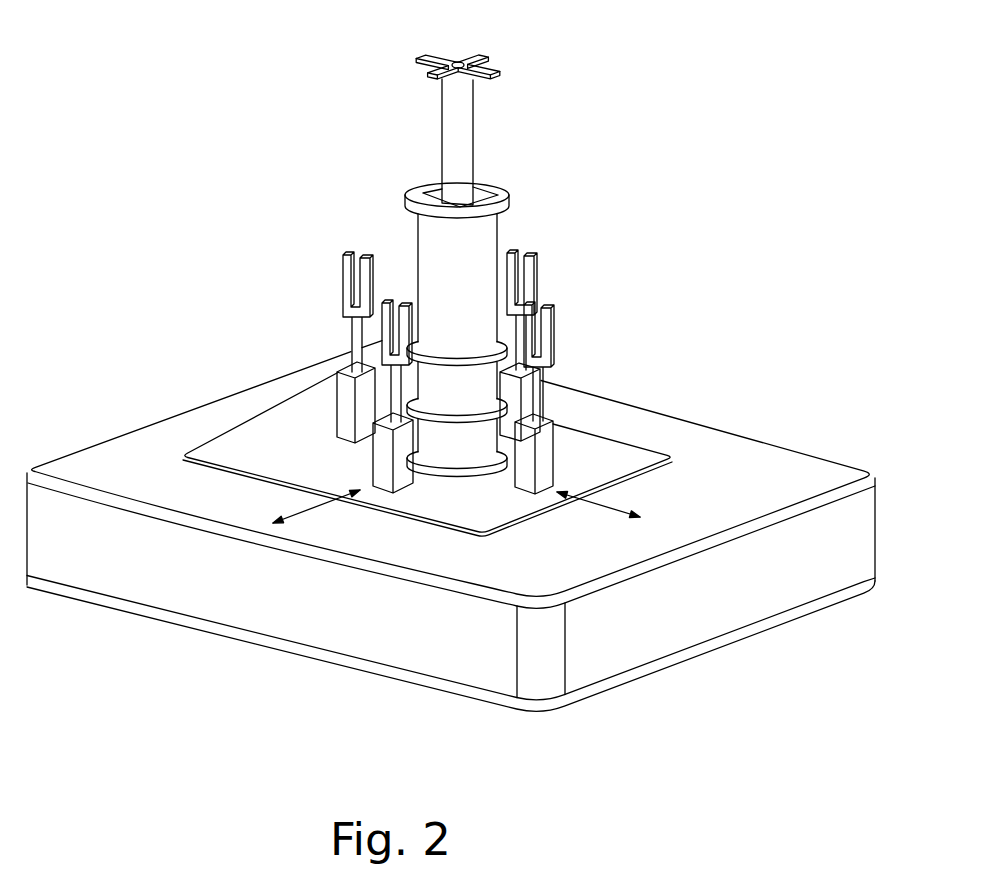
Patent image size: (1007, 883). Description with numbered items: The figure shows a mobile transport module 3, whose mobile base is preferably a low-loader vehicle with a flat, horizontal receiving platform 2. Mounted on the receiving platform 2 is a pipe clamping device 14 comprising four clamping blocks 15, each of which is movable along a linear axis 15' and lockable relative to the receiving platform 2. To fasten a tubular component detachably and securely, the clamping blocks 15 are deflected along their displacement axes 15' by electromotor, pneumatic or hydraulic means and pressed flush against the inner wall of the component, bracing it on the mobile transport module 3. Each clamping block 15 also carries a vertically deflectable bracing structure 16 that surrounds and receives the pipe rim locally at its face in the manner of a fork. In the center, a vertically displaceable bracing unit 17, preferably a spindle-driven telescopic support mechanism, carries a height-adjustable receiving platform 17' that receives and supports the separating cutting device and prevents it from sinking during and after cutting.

The receiving platform 2 is at (194, 443).
The mobile transport module 3 is at (73, 426).
The pipe clamping device 14 is at (296, 266).
The clamping blocks 15 is at (452, 414).
The linear axis 15' is at (499, 510).
The bracing structure 16 is at (384, 300).
The bracing unit 17 is at (495, 278).
The receiving platform 17' is at (505, 48).